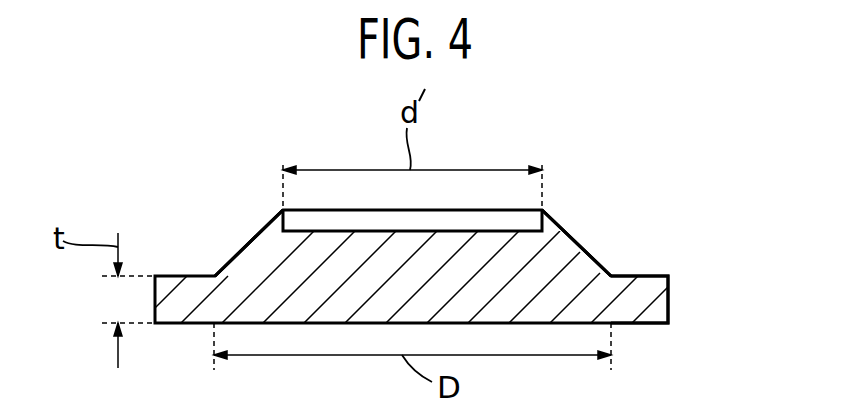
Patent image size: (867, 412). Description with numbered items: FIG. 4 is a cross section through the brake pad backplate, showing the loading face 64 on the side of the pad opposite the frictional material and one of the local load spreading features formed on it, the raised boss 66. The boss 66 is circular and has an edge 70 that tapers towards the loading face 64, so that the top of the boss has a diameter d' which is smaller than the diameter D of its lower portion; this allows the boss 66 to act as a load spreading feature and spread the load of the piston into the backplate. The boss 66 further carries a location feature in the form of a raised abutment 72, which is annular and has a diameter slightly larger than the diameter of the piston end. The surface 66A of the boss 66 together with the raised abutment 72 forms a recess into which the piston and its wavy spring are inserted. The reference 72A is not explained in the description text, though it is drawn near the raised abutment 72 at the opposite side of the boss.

The loading face 64 is at (638, 275).
The raised boss 66 is at (418, 262).
The surface of the boss 66A is at (385, 230).
The edge 70 is at (245, 247).
The raised abutment 72 is at (283, 208).
The right sloped edge 72A is at (542, 211).